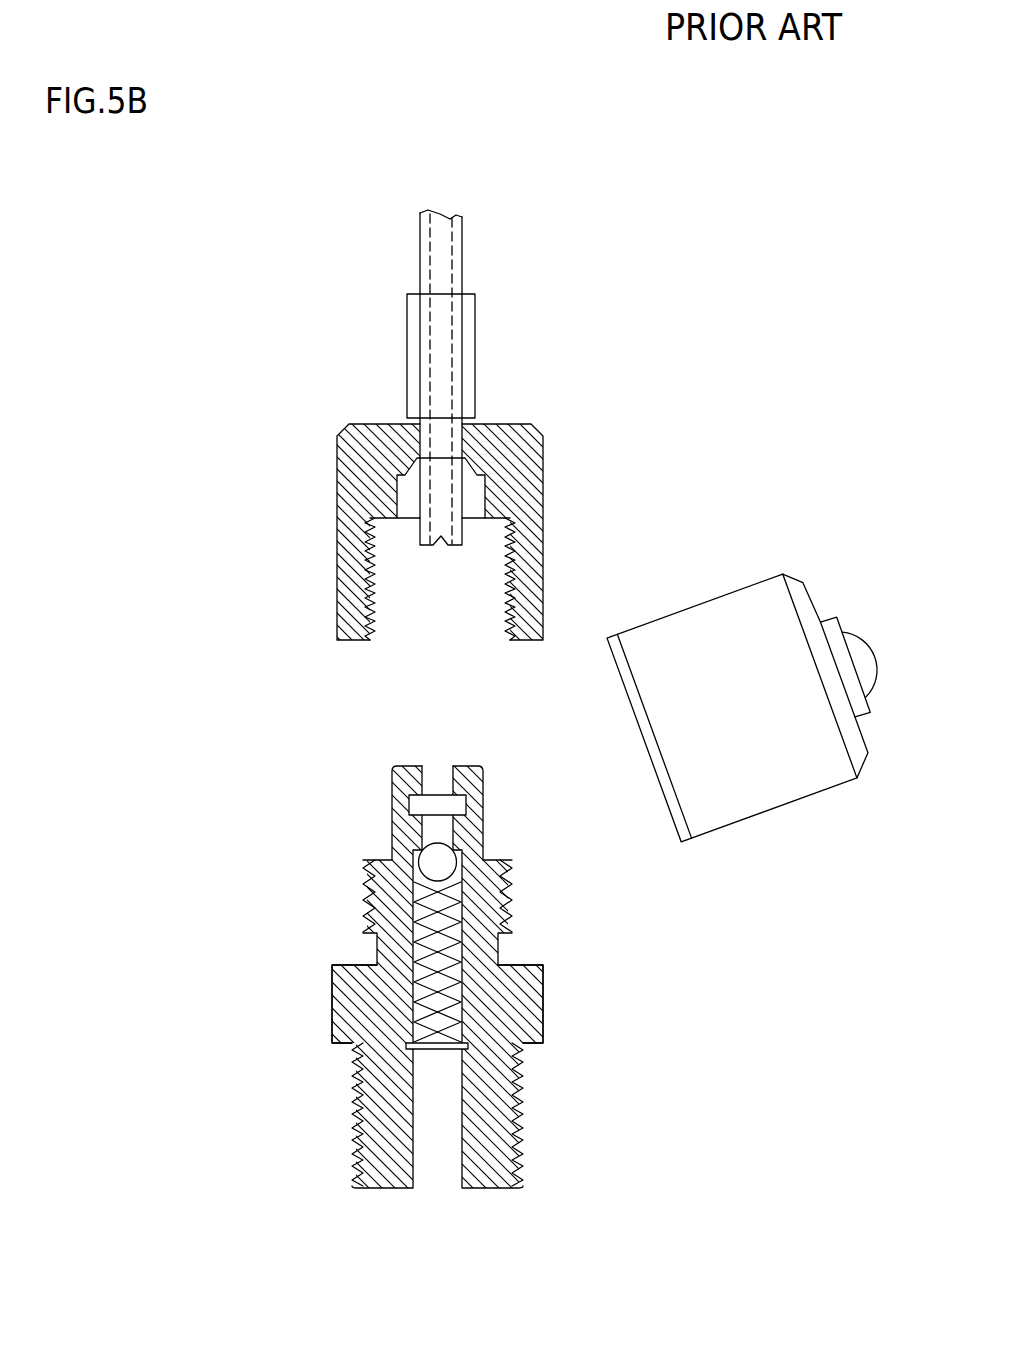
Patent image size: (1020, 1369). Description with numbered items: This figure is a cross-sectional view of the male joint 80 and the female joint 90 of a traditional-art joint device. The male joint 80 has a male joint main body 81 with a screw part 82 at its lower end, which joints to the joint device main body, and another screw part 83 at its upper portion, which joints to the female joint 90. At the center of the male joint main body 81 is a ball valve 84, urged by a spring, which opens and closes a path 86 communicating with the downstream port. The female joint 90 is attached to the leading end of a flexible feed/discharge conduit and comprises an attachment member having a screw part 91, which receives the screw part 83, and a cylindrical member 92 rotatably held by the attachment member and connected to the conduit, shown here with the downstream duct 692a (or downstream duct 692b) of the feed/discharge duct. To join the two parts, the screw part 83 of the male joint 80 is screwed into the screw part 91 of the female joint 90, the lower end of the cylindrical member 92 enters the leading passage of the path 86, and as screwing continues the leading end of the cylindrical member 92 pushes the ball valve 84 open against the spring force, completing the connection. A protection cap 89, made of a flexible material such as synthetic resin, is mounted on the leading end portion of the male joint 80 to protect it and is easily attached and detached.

The downstream duct 692a is at (301, 374).
The downstream duct 692b is at (409, 271).
The female joint 90 is at (453, 542).
The screw part 91 is at (388, 622).
The cylindrical member 92 is at (445, 545).
The protection cap 89 is at (700, 602).
The male joint 80 is at (441, 967).
The male joint main body 81 is at (380, 1137).
The screw part 82 is at (350, 1073).
The screw part 83 is at (363, 909).
The ball valve 84 is at (440, 865).
The path 86 is at (430, 780).